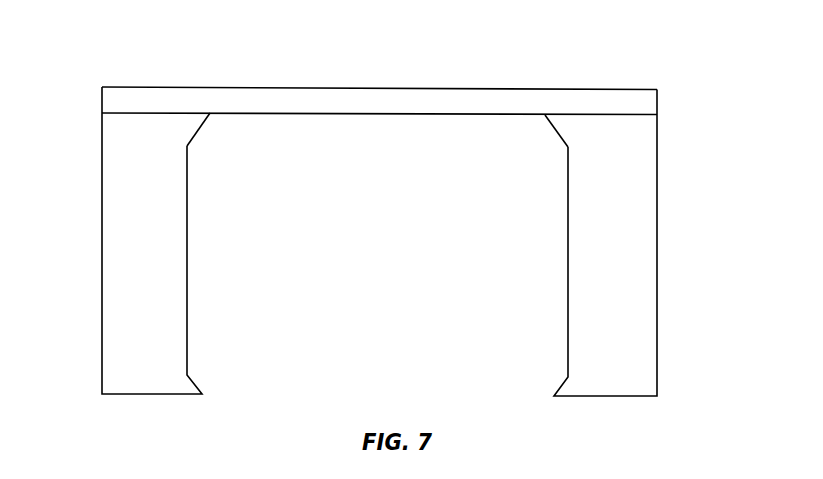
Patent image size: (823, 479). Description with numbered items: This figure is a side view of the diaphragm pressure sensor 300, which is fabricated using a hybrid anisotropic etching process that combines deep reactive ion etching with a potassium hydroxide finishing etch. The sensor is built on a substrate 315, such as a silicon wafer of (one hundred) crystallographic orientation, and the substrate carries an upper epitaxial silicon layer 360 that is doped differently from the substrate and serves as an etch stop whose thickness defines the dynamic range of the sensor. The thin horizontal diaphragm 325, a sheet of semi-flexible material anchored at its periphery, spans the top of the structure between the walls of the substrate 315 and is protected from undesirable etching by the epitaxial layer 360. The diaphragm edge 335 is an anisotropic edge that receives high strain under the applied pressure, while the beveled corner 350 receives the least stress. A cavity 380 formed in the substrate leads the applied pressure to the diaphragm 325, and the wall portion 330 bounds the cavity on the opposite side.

The diaphragm pressure sensor 300 is at (654, 38).
The substrate 315 is at (100, 335).
The diaphragm 325 is at (397, 75).
The second side wall 330 is at (568, 353).
The diaphragm edge 335 is at (545, 115).
The corner with bevel 350 is at (200, 132).
The epitaxial silicon layer 360 is at (650, 103).
The cavity 380 is at (233, 353).